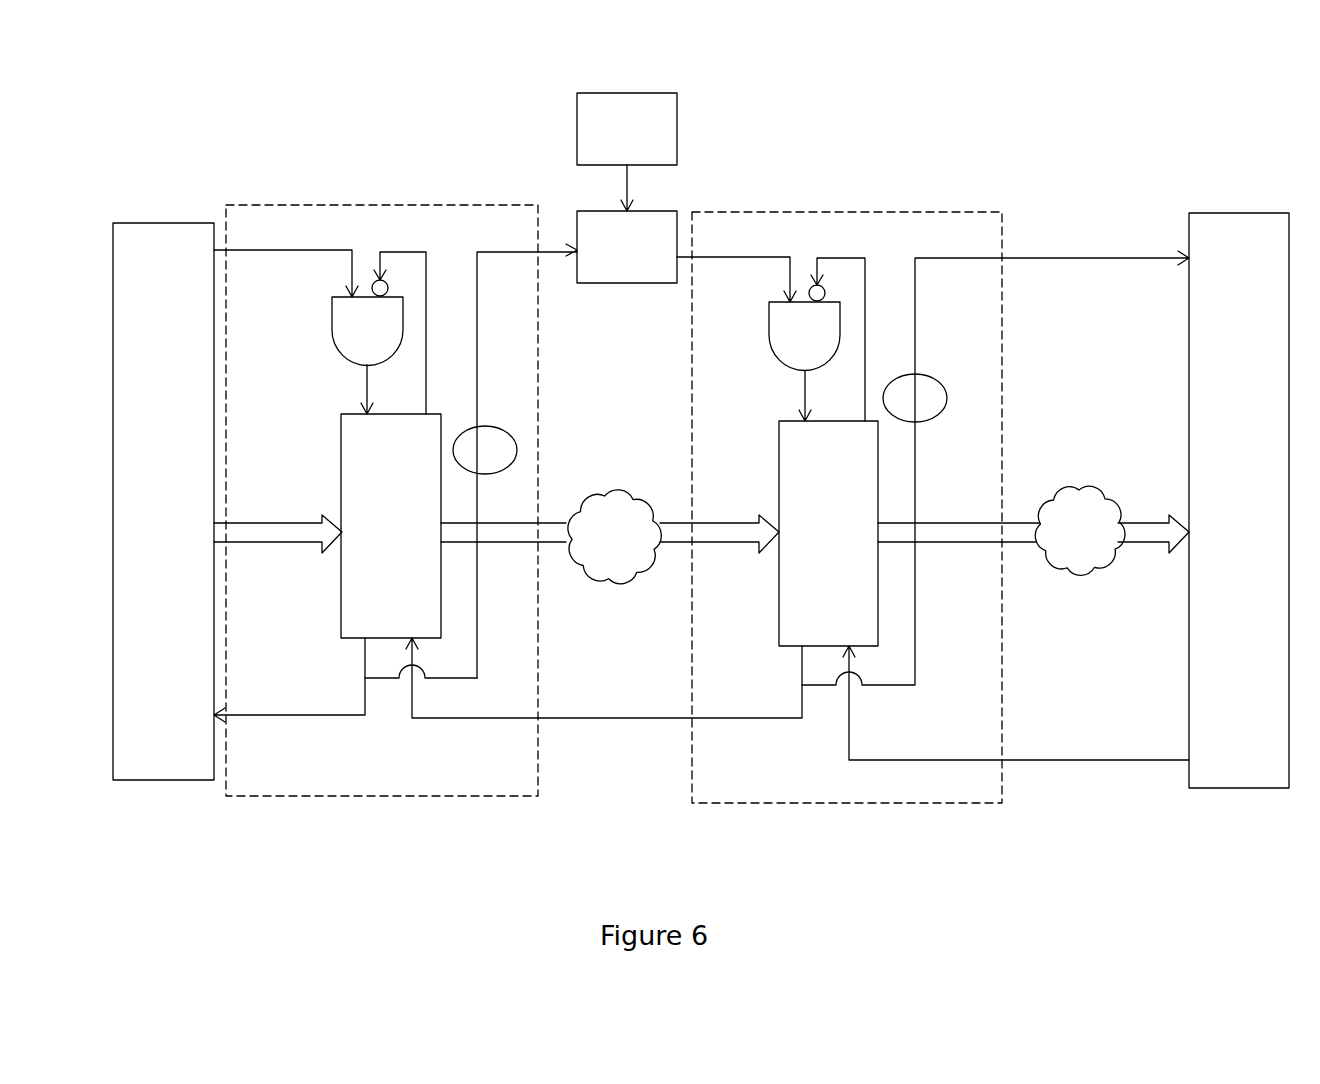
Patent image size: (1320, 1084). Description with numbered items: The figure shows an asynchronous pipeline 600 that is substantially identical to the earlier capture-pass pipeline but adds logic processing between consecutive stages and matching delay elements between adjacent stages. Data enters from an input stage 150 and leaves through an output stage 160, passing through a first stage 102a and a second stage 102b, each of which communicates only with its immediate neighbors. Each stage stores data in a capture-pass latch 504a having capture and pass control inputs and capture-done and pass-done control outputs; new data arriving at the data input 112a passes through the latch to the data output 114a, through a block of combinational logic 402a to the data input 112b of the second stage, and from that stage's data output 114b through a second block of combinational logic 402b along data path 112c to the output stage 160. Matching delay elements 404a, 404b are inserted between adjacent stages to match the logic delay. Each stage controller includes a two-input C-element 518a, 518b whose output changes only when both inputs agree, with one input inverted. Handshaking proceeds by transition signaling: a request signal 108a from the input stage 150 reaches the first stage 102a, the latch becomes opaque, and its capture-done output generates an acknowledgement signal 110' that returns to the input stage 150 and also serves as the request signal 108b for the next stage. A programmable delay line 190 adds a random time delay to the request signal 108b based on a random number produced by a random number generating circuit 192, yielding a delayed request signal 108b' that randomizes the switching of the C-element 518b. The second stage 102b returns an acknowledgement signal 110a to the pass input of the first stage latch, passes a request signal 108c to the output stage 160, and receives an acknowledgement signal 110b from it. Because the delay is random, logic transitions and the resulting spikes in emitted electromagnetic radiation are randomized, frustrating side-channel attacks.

The asynchronous pipeline 600 is at (1214, 160).
The input stage 150 is at (163, 501).
The output stage 160 is at (1239, 500).
The random number generating circuit 192 is at (627, 152).
The programmable delay line 190 is at (627, 247).
The first stage 102a is at (420, 797).
The second stage 102b is at (858, 805).
The capture-pass latch 504a is at (609, 530).
The two-input C-element 518a is at (379, 333).
The two-input C-element 518b is at (817, 339).
The matching delay element 404a is at (485, 450).
The matching delay element 404b is at (915, 398).
The request signal 108a is at (276, 252).
The request signal 108b is at (527, 461).
The delayed request signal 108b' is at (736, 292).
The request signal 108c is at (954, 260).
The data input 112a is at (277, 533).
The data input 112b is at (714, 544).
The data input 112c is at (1150, 546).
The data output 114a is at (494, 543).
The data output 114b is at (940, 544).
The combinational logic 402a is at (600, 570).
The combinational logic 402b is at (1098, 568).
The acknowledgement signal 110' is at (345, 712).
The acknowledgement signal 110a is at (722, 722).
The acknowledgement signal 110b is at (1057, 760).